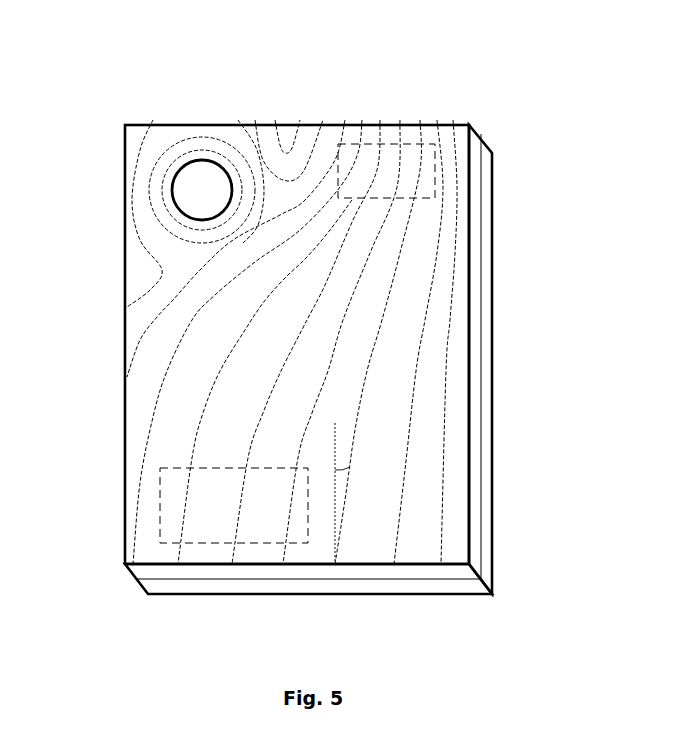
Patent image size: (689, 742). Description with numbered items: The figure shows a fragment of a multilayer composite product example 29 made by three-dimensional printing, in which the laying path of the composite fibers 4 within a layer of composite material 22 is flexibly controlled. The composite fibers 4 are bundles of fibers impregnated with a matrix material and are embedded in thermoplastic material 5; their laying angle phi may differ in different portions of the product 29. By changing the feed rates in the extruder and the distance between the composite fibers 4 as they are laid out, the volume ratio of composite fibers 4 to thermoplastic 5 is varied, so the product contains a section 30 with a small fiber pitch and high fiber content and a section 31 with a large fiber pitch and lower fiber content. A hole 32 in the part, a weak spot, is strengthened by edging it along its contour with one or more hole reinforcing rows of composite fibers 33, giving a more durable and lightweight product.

The composite fiber 4 is at (424, 448).
The thermoplastic material 5 is at (414, 374).
The layer of composite material 22 is at (489, 152).
The product example 29 is at (125, 323).
The section with a small pitch of composite fibers 30 is at (381, 145).
The section with a large pitch of composite fibers 31 is at (213, 543).
The hole in the part 32 is at (182, 163).
The hole reinforcing rows of composite fibers 33 is at (213, 152).